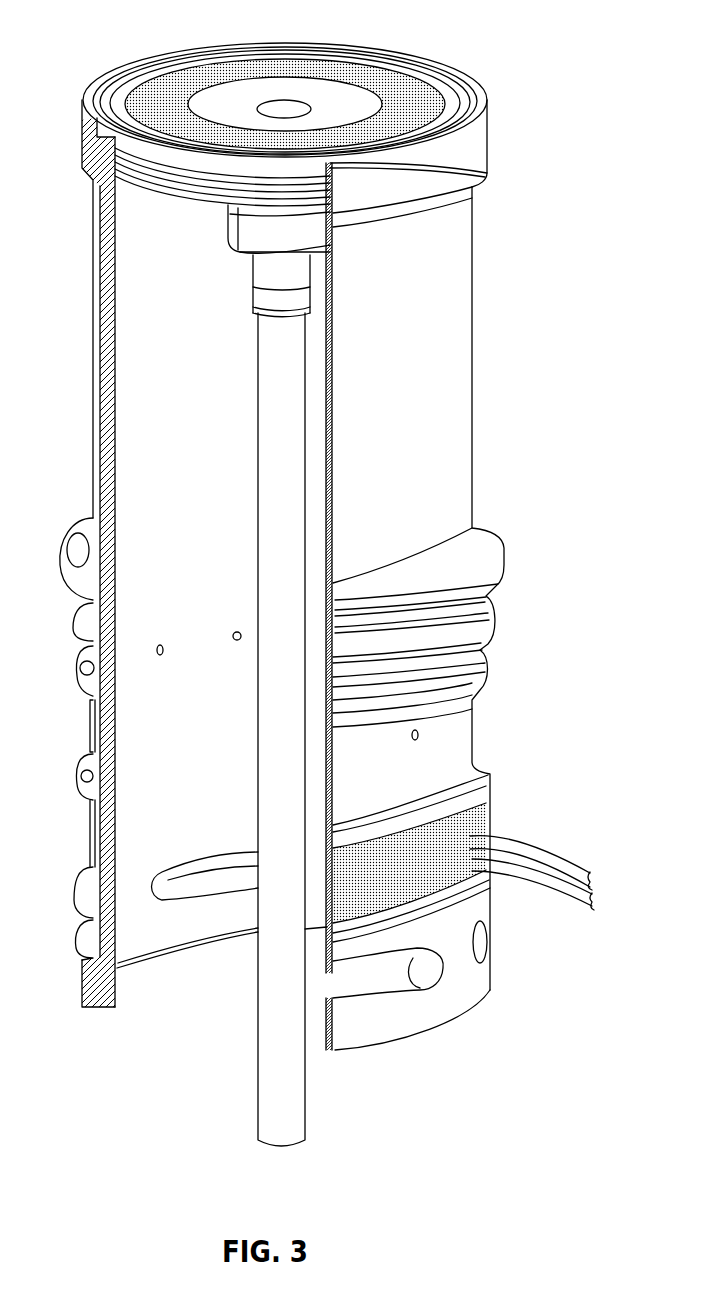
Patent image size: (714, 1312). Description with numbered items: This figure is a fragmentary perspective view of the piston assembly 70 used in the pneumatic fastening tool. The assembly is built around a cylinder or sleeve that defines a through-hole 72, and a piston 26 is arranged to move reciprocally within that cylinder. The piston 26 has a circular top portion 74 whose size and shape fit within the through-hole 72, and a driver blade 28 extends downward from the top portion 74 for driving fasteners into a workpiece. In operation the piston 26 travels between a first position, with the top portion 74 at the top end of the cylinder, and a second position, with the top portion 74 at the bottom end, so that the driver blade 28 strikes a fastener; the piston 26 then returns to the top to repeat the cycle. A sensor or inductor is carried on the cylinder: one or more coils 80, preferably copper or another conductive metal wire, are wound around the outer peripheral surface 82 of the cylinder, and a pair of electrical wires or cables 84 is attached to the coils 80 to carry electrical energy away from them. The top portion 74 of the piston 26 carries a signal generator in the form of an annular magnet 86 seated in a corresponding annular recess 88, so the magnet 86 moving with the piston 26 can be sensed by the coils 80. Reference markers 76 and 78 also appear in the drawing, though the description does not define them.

The piston assembly 70 is at (548, 86).
The through-hole 72 is at (130, 1013).
The circular top portion 74 is at (320, 93).
The cap rim flange 76 is at (140, 182).
The interior chamber 78 is at (210, 486).
The coils 80 is at (453, 883).
The outer peripheral surface 82 is at (460, 388).
The electrical wires or cables 84 is at (507, 837).
The annular magnet 86 is at (157, 97).
The annular recess 88 is at (484, 133).
The piston 26 is at (178, 208).
The driver blade 28 is at (273, 453).